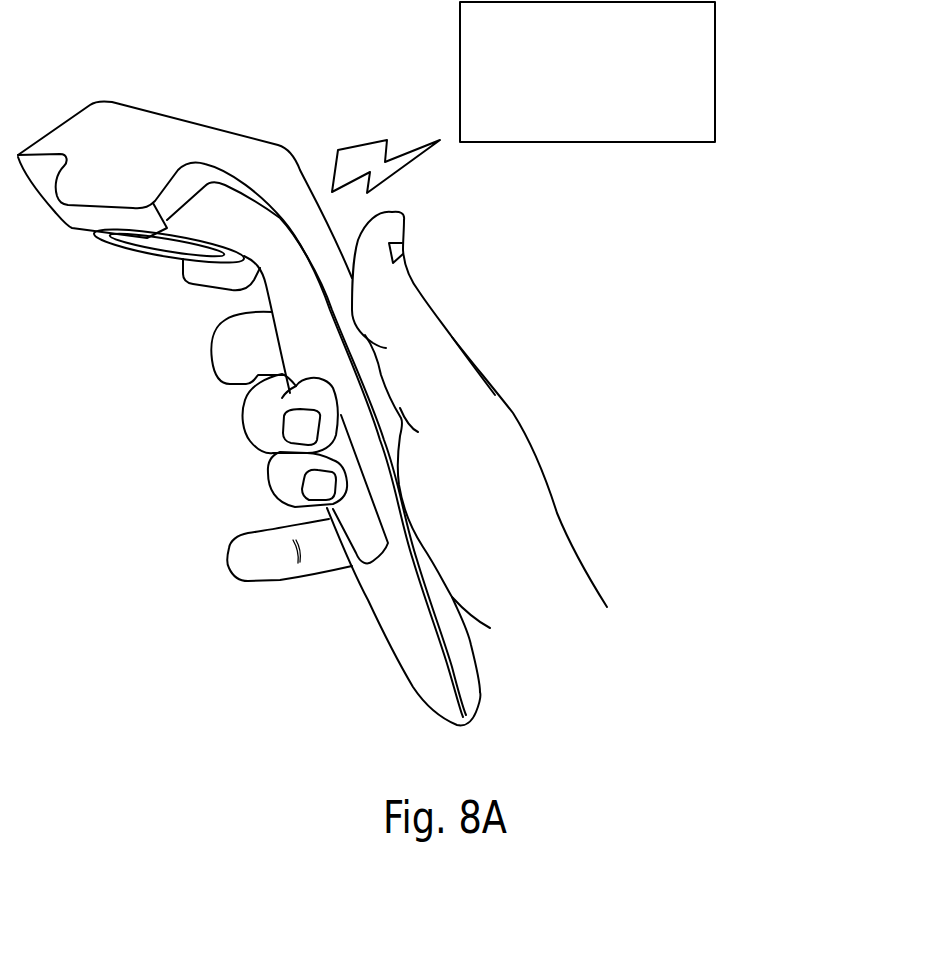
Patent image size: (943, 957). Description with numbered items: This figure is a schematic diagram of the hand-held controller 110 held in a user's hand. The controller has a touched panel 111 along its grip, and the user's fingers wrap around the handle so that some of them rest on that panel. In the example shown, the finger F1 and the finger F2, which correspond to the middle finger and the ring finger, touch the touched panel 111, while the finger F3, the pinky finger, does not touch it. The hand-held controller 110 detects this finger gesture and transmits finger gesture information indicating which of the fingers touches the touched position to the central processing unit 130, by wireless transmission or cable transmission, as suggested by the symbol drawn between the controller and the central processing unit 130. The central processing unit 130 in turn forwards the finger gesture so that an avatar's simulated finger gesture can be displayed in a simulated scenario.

The hand-held controller 110 is at (95, 29).
The touched panel 111 is at (376, 551).
The central processing unit 130 is at (715, 80).
The finger F1 is at (252, 433).
The finger F2 is at (273, 483).
The finger F3 is at (243, 560).